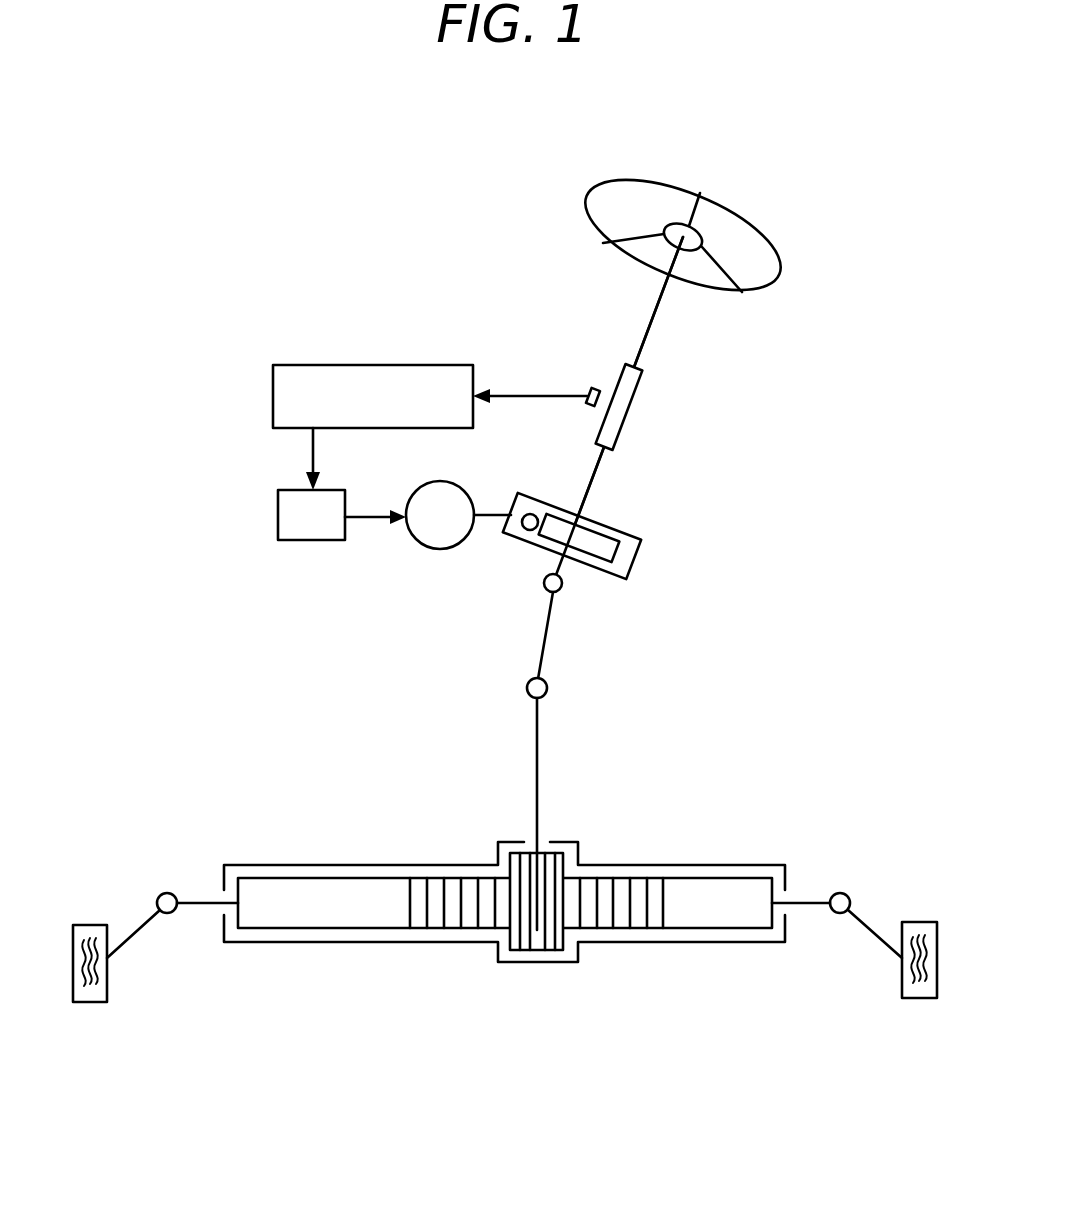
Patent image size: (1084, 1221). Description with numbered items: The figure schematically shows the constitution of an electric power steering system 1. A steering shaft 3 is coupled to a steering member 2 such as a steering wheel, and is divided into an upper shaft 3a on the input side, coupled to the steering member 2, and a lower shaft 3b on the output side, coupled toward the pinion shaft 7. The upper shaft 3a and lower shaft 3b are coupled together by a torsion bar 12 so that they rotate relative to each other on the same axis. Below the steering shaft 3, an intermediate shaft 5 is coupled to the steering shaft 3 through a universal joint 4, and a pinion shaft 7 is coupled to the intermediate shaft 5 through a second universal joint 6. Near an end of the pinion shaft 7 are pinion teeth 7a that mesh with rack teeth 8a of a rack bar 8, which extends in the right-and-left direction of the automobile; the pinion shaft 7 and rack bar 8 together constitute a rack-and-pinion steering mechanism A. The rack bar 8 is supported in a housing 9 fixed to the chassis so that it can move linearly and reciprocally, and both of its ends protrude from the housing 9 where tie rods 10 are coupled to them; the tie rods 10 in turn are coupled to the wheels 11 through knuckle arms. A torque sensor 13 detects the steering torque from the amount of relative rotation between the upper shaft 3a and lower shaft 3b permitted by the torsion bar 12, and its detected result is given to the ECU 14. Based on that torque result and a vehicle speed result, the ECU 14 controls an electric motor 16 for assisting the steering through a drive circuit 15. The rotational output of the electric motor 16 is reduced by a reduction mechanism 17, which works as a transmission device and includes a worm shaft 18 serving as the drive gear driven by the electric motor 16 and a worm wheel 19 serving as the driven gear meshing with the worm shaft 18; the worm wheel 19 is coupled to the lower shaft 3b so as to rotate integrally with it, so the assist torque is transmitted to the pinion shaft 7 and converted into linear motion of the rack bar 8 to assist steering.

The electric power steering system 1 is at (812, 178).
The steering member 2 is at (678, 180).
The steering shaft 3 is at (672, 307).
The upper shaft 3a is at (647, 343).
The lower shaft 3b is at (597, 478).
The universal joint 4 is at (563, 583).
The intermediate shaft 5 is at (548, 634).
The universal joint 6 is at (548, 688).
The pinion shaft 7 is at (552, 788).
The pinion teeth 7a is at (550, 950).
The rack bar 8 is at (625, 942).
The rack teeth 8a is at (473, 930).
The housing 9 is at (398, 862).
The tie rods 10 is at (143, 930).
The wheels 11 is at (90, 1002).
The torsion bar 12 is at (634, 410).
The torque sensor 13 is at (592, 388).
The ECU 14 is at (308, 365).
The drive circuit 15 is at (278, 513).
The electric motor 16 is at (441, 550).
The reduction mechanism 17 is at (656, 541).
The worm shaft 18 is at (528, 530).
The worm wheel 19 is at (632, 555).
The steering mechanism A is at (590, 975).